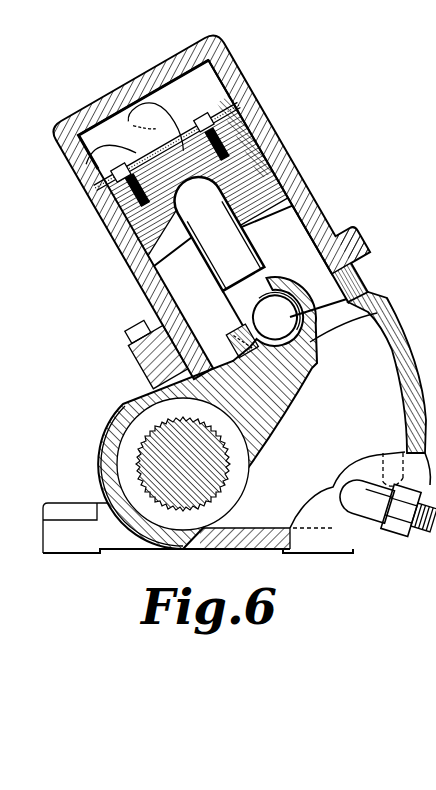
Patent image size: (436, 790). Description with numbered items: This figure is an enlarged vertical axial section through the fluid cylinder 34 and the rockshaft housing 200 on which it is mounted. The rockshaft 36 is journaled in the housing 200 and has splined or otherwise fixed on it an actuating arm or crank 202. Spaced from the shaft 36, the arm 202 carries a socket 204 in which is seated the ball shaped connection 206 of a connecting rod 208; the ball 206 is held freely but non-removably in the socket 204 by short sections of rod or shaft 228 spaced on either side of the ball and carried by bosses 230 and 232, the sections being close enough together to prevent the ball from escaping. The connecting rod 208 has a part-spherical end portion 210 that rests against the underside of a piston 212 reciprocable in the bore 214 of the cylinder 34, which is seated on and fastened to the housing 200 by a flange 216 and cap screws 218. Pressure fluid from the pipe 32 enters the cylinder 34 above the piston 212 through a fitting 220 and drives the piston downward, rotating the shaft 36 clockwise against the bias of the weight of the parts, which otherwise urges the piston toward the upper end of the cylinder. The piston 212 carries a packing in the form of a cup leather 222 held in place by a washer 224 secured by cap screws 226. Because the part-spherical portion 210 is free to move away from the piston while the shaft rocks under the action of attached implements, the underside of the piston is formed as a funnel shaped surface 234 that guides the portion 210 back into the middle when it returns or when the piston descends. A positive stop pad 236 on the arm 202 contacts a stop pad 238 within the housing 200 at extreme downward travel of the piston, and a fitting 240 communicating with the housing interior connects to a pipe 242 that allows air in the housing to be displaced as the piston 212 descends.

The pipe 32 is at (117, 236).
The cylinder 34 is at (250, 103).
The rockshaft 36 is at (153, 450).
The rockshaft housing 200 is at (102, 480).
The actuating arm 202 is at (290, 383).
The socket 204 is at (350, 247).
The ball shaped connection 206 is at (357, 270).
The connecting rod 208 is at (290, 207).
The part-spherical end portion 210 is at (300, 193).
The piston 212 is at (252, 147).
The bore 214 is at (235, 84).
The flange 216 is at (158, 330).
The cap screws 218 is at (163, 330).
The fitting 220 is at (128, 104).
The cup leather 222 is at (228, 121).
The washer 224 is at (83, 177).
The cap screws 226 is at (90, 190).
The rod or shaft sections 228 is at (247, 322).
The boss 230 is at (268, 282).
The boss 232 is at (243, 340).
The funnel shaped surface 234 is at (253, 170).
The positive stop pad 236 is at (380, 298).
The stop pad 238 is at (385, 453).
The fitting 240 is at (365, 508).
The pipe 242 is at (407, 545).